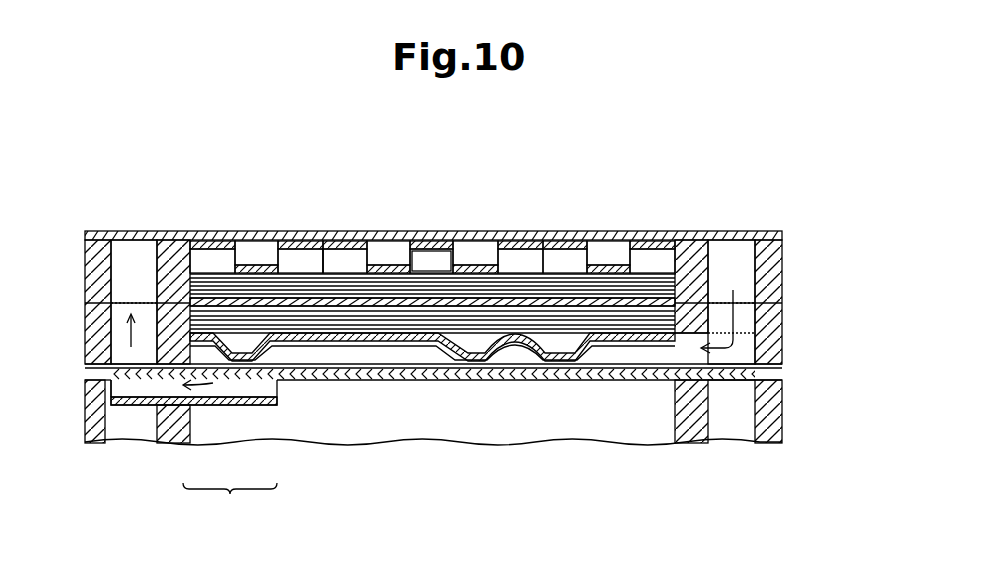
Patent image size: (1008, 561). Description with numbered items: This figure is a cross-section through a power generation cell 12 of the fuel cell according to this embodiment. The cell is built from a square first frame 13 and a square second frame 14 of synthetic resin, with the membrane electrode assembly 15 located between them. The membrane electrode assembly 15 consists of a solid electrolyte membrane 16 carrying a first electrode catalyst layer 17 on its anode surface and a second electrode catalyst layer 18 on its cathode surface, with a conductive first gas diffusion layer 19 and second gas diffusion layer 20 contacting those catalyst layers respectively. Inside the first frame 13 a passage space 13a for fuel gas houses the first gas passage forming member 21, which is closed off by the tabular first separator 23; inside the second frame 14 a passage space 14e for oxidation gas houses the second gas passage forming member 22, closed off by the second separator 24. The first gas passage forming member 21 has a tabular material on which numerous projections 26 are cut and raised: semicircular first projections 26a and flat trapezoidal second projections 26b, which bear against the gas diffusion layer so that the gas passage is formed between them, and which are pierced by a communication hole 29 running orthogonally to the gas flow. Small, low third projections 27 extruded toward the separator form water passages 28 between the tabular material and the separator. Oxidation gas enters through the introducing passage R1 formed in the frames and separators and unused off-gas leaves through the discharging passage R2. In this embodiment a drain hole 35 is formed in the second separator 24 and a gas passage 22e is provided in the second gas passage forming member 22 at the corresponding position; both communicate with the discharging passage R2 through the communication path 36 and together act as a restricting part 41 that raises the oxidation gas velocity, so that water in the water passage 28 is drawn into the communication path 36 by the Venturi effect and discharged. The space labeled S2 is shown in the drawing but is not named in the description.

The power generation cell 12 is at (464, 340).
The first frame 13 is at (448, 300).
The second frame 14 is at (448, 370).
The passage space of fuel gas 13a is at (446, 264).
The passage space of oxidation gas 14e is at (391, 363).
The membrane electrode assembly 15 is at (343, 286).
The solid electrolyte membrane 16 is at (392, 268).
The first electrode catalyst layer 17 is at (423, 268).
The second electrode catalyst layer 18 is at (451, 363).
The first gas diffusion layer 19 is at (623, 274).
The second gas diffusion layer 20 is at (543, 362).
The first gas passage forming member 21 is at (646, 232).
The second gas passage forming member 22 is at (232, 441).
The gas passage 22e is at (230, 401).
The first separator 23 is at (683, 231).
The second separator 24 is at (715, 411).
The projections 26 is at (432, 300).
The first projections 26a is at (607, 262).
The second projections 26b is at (248, 262).
The third projections 27 is at (463, 362).
The water passage 28 is at (509, 241).
The communication hole 29 is at (323, 262).
The drain hole 35 is at (220, 373).
The communication path 36 is at (214, 381).
The restricting part 41 is at (230, 502).
The introducing passage R1 is at (730, 256).
The discharging passage R2 is at (131, 256).
The space S2 is at (423, 363).